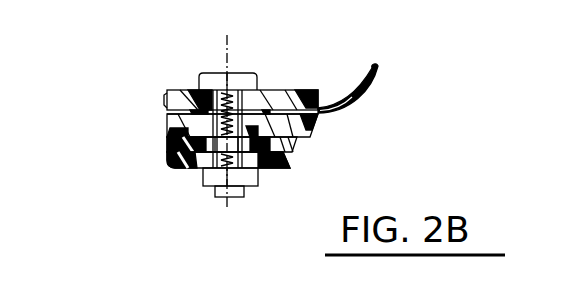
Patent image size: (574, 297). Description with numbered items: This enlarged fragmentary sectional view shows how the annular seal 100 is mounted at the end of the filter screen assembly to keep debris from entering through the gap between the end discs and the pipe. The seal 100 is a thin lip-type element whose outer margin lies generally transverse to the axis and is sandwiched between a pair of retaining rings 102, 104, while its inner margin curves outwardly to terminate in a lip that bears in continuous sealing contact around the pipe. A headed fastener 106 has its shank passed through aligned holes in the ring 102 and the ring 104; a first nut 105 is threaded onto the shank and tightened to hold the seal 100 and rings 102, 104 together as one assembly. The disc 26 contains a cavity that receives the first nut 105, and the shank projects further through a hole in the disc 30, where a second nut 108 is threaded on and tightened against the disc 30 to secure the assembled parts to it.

The annular seal 100 is at (362, 70).
The retaining ring 102 is at (167, 91).
The retaining ring 104 is at (167, 118).
The first nut 105 is at (200, 144).
The headed fastener 106 is at (200, 73).
The second nut 108 is at (203, 186).
The disc 26 is at (300, 143).
The disc 30 is at (287, 162).